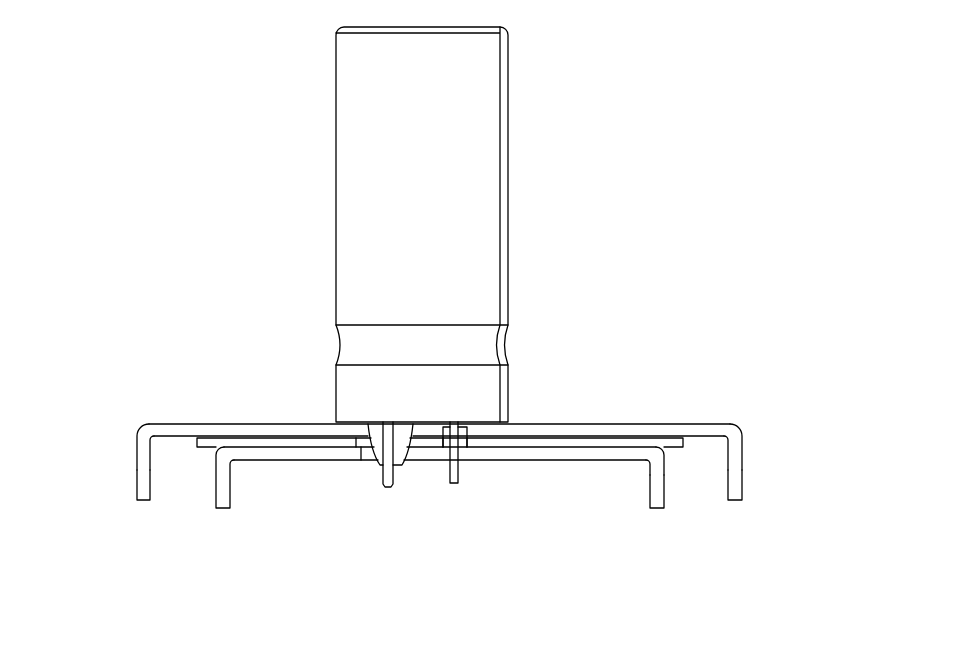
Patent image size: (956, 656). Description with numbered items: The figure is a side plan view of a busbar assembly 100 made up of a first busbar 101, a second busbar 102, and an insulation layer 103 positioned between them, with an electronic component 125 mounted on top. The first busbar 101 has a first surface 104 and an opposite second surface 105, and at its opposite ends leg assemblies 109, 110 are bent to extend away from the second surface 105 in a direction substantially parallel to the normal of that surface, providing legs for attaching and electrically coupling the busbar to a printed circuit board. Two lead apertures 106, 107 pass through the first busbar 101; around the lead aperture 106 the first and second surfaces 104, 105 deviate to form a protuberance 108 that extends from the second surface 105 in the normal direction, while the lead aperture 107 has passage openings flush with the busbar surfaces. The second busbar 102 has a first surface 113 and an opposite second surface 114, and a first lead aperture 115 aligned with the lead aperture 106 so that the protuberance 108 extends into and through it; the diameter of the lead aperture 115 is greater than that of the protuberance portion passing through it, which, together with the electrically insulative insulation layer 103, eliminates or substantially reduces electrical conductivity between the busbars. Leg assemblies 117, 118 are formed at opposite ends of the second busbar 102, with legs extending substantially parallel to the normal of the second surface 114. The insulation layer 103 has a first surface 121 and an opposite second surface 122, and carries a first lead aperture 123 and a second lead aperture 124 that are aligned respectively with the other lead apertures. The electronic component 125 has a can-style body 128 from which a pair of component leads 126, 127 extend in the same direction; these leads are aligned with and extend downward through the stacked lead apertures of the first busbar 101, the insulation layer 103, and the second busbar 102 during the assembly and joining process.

The busbar assembly 100 is at (275, 60).
The first busbar 101 is at (684, 372).
The second busbar 102 is at (570, 486).
The insulation layer 103 is at (189, 454).
The first surface 104 is at (710, 424).
The second surface 105 is at (712, 448).
The lead aperture 106 is at (379, 410).
The lead aperture 107 is at (465, 411).
The protuberance 108 is at (373, 463).
The leg assembly 109 is at (108, 448).
The leg assembly 110 is at (743, 466).
The first surface 113 is at (543, 440).
The second surface 114 is at (502, 462).
The first lead aperture 115 is at (355, 470).
The leg assembly 117 is at (232, 481).
The leg assembly 118 is at (649, 481).
The first surface 121 is at (620, 440).
The second surface 122 is at (672, 451).
The first lead aperture 123 is at (354, 443).
The second lead aperture 124 is at (440, 449).
The electronic component 125 is at (543, 27).
The component lead 126 is at (388, 487).
The component lead 127 is at (456, 486).
The body 128 is at (507, 168).